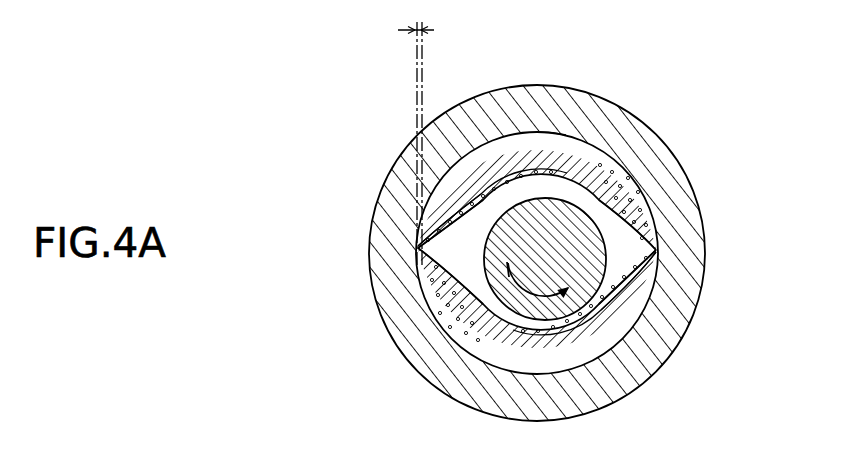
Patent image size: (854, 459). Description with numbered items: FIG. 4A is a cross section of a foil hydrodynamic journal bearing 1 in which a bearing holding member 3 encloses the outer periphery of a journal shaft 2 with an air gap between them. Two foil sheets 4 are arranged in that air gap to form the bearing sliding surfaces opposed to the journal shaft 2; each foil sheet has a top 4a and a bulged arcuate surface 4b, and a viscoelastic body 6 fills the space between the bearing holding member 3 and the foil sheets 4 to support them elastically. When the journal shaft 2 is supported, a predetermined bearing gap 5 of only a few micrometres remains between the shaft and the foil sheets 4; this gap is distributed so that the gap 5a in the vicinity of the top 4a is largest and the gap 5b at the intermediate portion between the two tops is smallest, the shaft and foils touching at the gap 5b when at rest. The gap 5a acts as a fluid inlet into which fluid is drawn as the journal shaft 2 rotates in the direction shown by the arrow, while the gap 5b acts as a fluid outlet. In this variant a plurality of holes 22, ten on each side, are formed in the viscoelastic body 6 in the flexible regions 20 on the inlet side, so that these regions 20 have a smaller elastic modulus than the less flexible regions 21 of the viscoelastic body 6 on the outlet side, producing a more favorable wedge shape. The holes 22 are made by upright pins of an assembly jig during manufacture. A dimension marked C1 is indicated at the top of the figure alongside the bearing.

The foil hydrodynamic journal bearing 1 is at (598, 88).
The journal shaft 2 is at (590, 255).
The bearing holding member 3 is at (677, 315).
The foil sheets 4 is at (457, 223).
The tops 4a is at (418, 248).
The bulged arcuate surfaces 4b is at (495, 150).
The bearing gap 5 is at (540, 187).
The gap in the vicinity of the top 5a is at (470, 268).
The smallest gap 5b is at (567, 365).
The viscoelastic body 6 is at (550, 133).
The flexible regions 20 is at (605, 235).
The less flexible regions 21 is at (463, 177).
The holes 22 is at (640, 197).
The clearance C1 is at (402, 134).